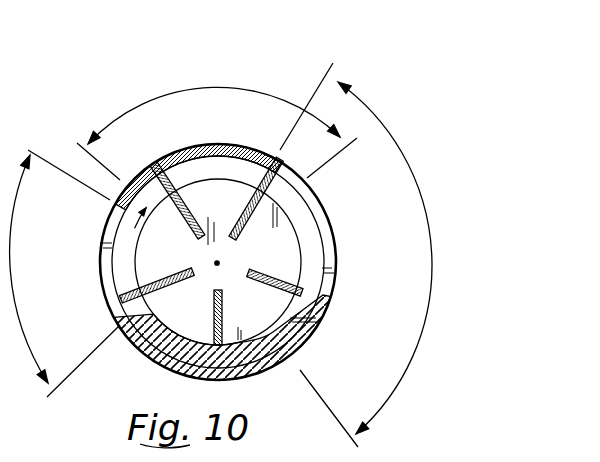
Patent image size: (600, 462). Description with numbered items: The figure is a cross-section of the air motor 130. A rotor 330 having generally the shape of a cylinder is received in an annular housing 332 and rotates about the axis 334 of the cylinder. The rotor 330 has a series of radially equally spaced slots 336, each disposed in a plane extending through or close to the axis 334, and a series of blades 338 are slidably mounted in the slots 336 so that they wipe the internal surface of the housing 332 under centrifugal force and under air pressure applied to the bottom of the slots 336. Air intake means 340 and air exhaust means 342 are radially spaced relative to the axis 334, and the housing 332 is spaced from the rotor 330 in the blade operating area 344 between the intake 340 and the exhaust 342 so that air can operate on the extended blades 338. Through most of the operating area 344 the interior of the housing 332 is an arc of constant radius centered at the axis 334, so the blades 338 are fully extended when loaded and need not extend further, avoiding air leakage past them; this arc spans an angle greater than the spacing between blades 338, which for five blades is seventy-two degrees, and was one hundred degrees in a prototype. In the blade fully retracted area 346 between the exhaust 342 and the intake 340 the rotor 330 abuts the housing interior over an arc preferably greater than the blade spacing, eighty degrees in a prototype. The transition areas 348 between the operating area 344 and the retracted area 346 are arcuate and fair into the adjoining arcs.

The air motor 130 is at (215, 210).
The rotor 330 is at (273, 322).
The annular housing 332 is at (328, 298).
The axis 334 is at (221, 262).
The slots 336 is at (236, 233).
The blades 338 is at (161, 170).
The air intake means 340 is at (107, 265).
The air exhaust means 342 is at (420, 202).
The blade operating area 344 is at (192, 88).
The blade fully retracted area 346 is at (186, 359).
The transition areas 348 is at (311, 331).